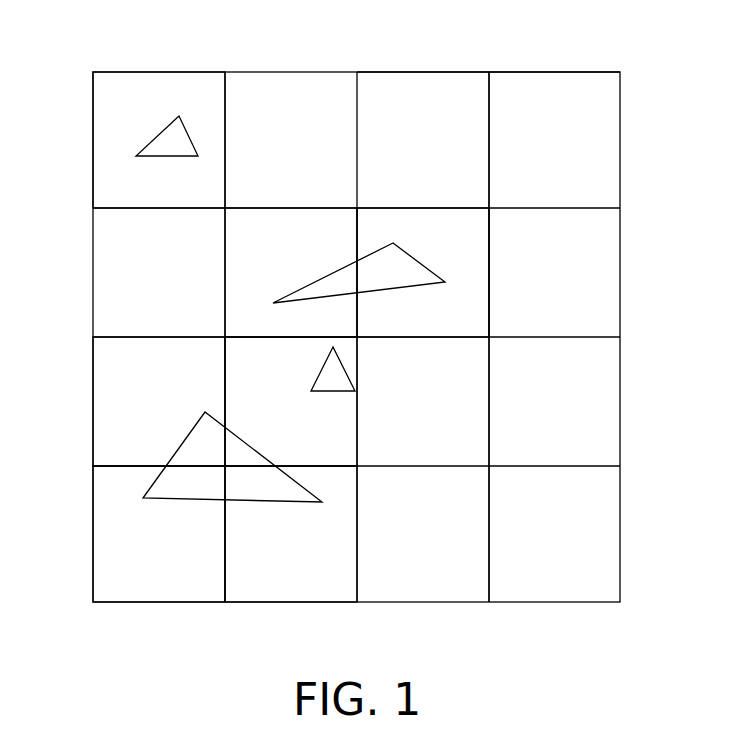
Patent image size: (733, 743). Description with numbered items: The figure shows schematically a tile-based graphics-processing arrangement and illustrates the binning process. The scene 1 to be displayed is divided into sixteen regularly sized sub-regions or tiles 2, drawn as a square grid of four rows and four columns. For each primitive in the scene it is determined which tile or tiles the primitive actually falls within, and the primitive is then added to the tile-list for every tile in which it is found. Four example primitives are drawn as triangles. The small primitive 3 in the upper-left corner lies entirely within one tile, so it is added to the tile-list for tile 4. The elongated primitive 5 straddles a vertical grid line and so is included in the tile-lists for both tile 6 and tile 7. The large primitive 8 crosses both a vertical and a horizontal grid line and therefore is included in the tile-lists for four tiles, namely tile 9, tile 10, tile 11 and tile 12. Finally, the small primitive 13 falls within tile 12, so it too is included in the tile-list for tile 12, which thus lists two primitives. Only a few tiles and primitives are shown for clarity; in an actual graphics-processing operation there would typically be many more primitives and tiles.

The scene 1 is at (88, 64).
The tiles 2 is at (424, 72).
The primitive 3 is at (158, 135).
The tile 4 is at (167, 72).
The primitive 5 is at (339, 265).
The tile 6 is at (252, 267).
The tile 7 is at (448, 302).
The primitive 8 is at (262, 503).
The tile 9 is at (145, 585).
The tile 10 is at (110, 398).
The tile 11 is at (310, 583).
The tile 12 is at (307, 415).
The primitive 13 is at (350, 375).